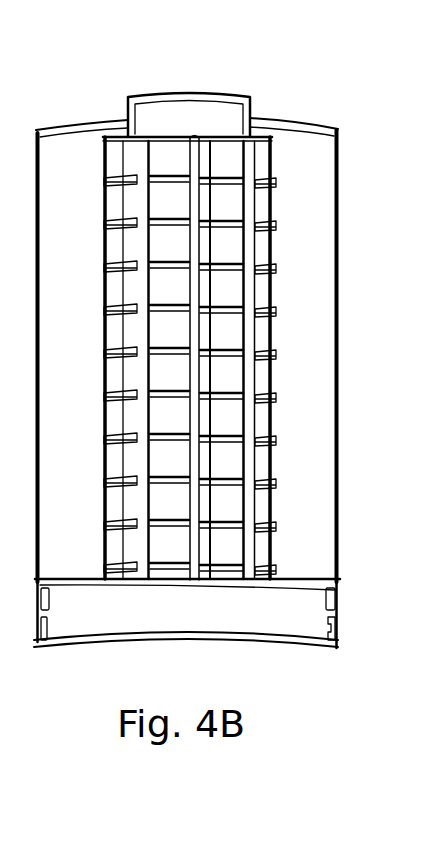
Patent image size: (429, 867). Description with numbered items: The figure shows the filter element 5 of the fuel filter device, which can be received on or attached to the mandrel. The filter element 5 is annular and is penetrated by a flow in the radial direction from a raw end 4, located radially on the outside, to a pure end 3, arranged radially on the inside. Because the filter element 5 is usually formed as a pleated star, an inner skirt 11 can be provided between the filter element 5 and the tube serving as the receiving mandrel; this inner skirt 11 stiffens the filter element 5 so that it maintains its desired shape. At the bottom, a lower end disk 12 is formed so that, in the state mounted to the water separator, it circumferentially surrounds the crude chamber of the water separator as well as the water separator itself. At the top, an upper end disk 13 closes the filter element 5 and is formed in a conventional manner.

The pure end 3 is at (271, 214).
The raw end 4 is at (340, 312).
The filter element 5 is at (302, 378).
The inner skirt 11 is at (276, 262).
The lower end disk 12 is at (285, 620).
The upper end disk 13 is at (275, 120).